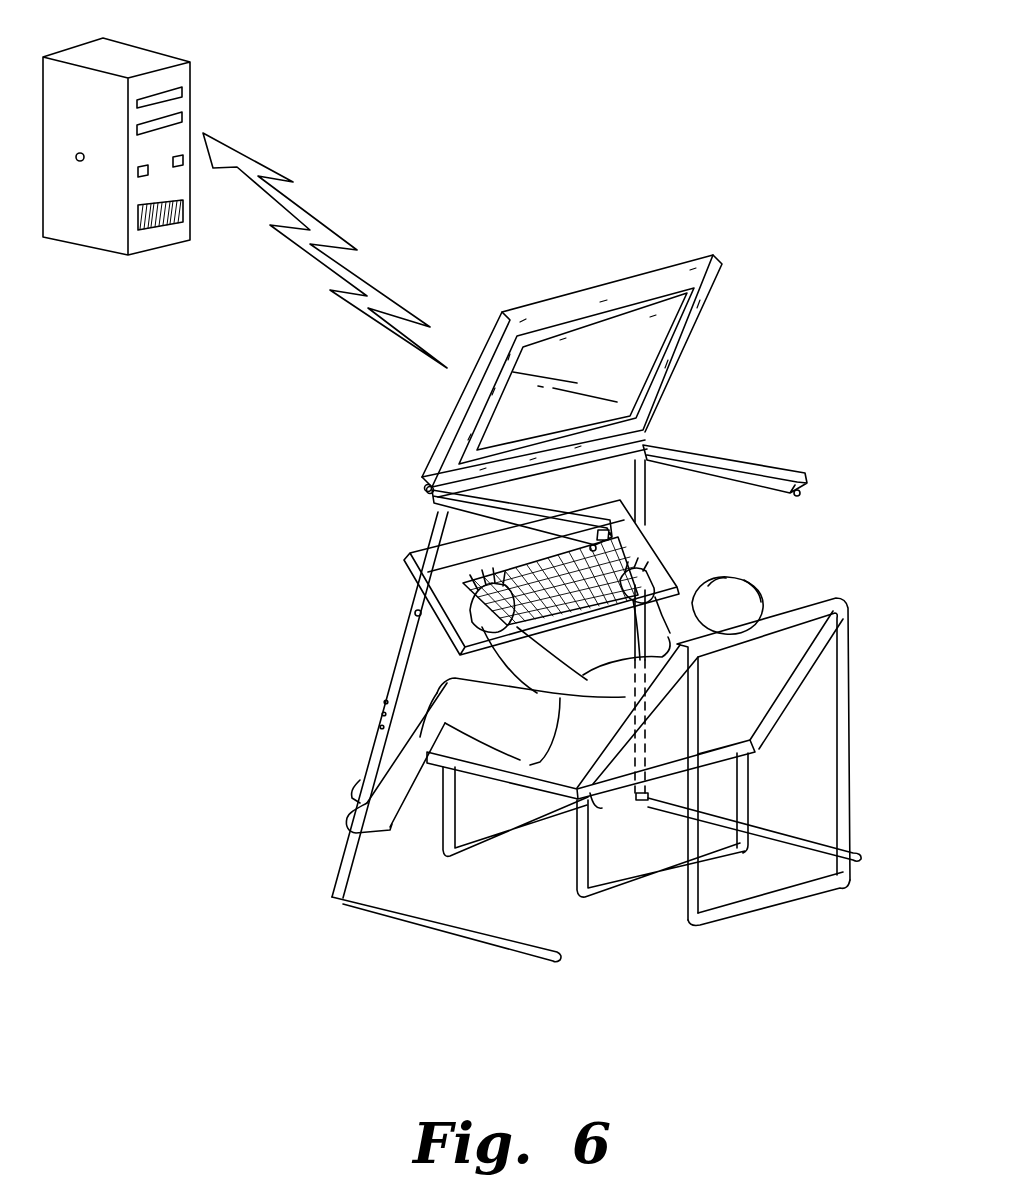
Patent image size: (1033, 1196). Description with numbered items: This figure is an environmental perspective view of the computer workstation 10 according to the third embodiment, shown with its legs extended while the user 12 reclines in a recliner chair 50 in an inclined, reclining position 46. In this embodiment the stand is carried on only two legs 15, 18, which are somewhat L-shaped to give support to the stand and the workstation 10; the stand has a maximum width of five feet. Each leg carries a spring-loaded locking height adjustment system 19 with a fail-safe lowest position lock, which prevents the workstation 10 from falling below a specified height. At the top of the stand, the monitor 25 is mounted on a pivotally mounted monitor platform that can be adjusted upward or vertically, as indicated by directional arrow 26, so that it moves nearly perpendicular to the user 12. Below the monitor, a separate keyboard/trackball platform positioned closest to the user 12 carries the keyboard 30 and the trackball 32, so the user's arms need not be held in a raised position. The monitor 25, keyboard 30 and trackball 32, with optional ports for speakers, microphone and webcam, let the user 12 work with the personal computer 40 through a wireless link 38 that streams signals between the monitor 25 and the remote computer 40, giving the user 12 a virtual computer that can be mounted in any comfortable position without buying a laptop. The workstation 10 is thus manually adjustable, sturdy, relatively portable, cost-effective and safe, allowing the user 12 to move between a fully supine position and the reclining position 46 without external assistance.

The computer workstation 10 is at (878, 283).
The user 12 is at (548, 773).
The leg 15 is at (337, 893).
The leg 18 is at (647, 490).
The spring-loaded locking height adjustment system 19 is at (375, 727).
The monitor 25 is at (607, 278).
The directional arrow 26 is at (718, 440).
The keyboard 30 is at (443, 547).
The trackball 32 is at (653, 568).
The wireless link 38 is at (350, 238).
The personal computer 40 is at (188, 60).
The reclining position 46 is at (878, 600).
The recliner chair 50 is at (790, 895).